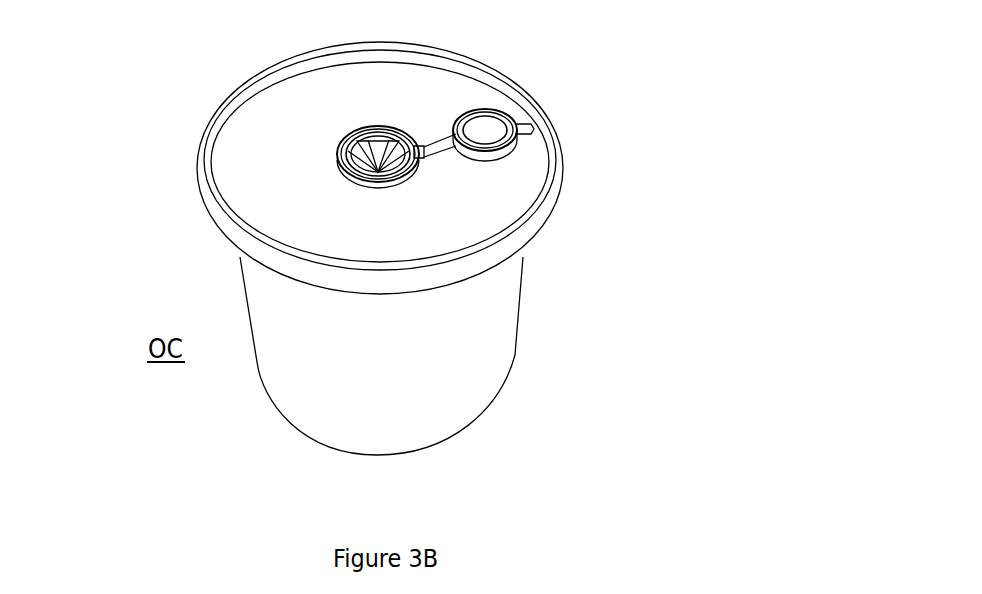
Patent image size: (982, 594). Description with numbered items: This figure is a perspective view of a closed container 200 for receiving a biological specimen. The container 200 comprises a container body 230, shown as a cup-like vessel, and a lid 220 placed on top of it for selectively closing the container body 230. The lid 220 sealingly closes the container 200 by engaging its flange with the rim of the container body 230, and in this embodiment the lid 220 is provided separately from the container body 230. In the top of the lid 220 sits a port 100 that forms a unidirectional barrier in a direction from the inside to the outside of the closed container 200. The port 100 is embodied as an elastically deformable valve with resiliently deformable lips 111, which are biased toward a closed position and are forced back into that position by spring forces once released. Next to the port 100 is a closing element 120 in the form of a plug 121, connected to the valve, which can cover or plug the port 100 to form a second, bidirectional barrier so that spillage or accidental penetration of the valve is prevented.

The container 200 is at (128, 67).
The lid 220 is at (250, 167).
The container body 230 is at (490, 357).
The port 100 is at (359, 143).
The resiliently deformable lips 111 is at (357, 152).
The closing element 120 is at (600, 127).
The plug 121 is at (500, 132).